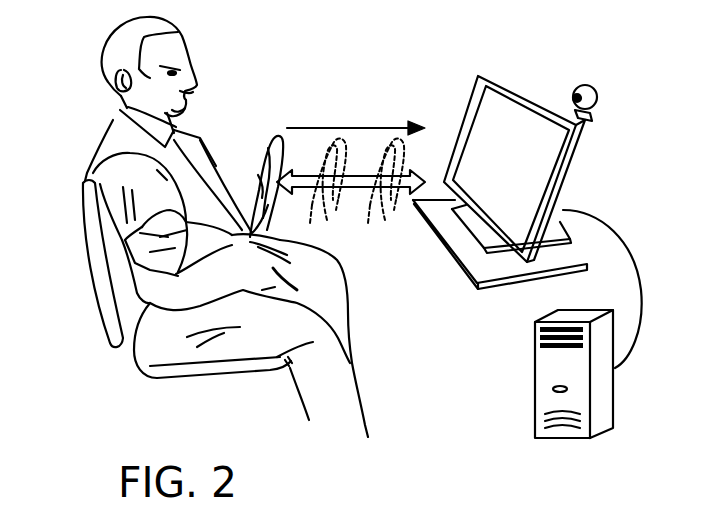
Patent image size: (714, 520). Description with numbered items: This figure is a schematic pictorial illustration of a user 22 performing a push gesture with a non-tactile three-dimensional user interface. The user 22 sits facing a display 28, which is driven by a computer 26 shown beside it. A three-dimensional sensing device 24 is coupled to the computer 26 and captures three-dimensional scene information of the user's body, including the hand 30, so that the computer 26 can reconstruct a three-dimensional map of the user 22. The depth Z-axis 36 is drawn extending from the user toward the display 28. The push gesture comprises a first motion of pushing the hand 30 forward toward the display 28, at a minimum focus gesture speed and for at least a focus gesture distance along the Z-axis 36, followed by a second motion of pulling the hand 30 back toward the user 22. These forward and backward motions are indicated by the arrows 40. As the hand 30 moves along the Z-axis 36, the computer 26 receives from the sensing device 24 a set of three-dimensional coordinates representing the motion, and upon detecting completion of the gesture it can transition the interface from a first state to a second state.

The user 22 is at (101, 56).
The 3D sensing device 24 is at (598, 88).
The computer 26 is at (615, 398).
The display 28 is at (573, 170).
The hand 30 is at (254, 168).
The Z-axis 36 is at (373, 125).
The arrows 40 is at (362, 187).